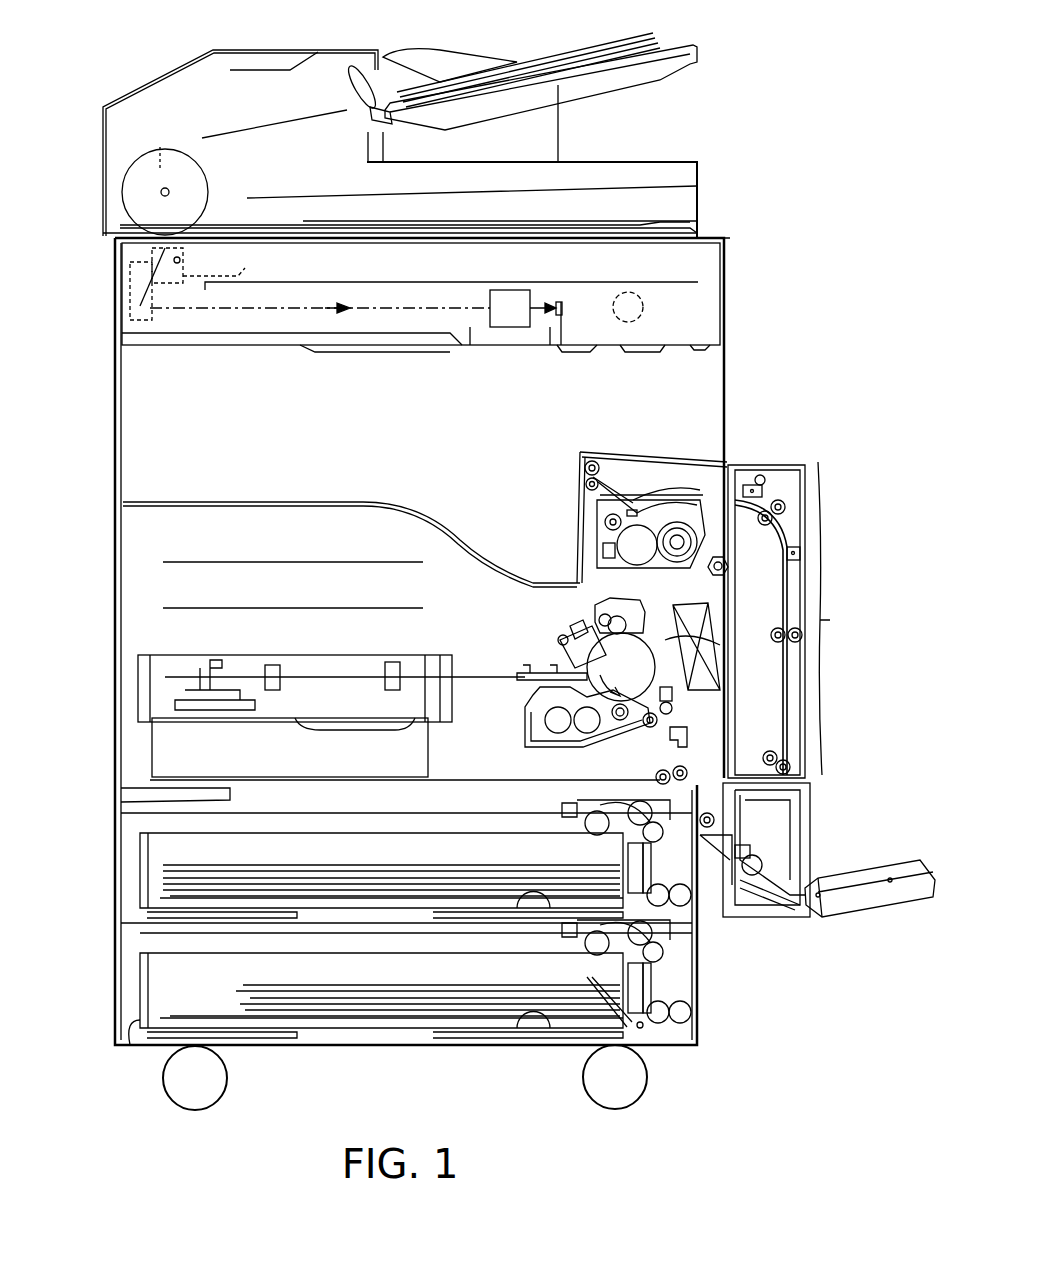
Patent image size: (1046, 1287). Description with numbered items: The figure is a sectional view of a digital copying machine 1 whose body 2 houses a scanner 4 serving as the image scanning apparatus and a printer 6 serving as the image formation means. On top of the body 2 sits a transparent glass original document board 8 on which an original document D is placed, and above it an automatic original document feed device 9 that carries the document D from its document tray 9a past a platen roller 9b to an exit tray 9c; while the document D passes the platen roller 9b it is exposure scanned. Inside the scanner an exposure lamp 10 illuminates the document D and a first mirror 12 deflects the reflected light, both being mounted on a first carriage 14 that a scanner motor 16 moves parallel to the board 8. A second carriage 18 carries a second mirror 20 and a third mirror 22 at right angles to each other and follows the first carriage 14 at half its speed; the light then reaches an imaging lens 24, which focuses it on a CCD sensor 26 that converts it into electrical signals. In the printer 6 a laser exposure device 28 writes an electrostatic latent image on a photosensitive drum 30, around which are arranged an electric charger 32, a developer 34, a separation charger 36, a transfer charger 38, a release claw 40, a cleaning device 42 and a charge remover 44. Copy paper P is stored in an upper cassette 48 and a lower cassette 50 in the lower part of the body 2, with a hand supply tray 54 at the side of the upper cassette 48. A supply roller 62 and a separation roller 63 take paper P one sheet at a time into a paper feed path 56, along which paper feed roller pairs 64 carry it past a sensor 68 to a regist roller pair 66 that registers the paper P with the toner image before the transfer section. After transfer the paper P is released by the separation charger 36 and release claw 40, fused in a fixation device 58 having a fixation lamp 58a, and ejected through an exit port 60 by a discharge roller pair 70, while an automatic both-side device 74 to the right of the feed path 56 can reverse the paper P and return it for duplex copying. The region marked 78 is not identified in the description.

The digital copying machine 1 is at (810, 240).
The apparatus body 2 is at (726, 366).
The scanner 4 is at (721, 302).
The printer 6 is at (818, 808).
The original document board 8 is at (660, 230).
The automatic original document feed device 9 is at (258, 70).
The document tray 9a is at (633, 57).
The platen roller 9b is at (128, 195).
The exit tray 9c is at (628, 162).
The exposure lamp 10 is at (181, 260).
The first mirror 12 is at (166, 280).
The first carriage 14 is at (242, 270).
The scanner motor 16 is at (645, 307).
The second carriage 18 is at (130, 305).
The second mirror 20 is at (143, 275).
The third mirror 22 is at (140, 310).
The imaging lens 24 is at (510, 330).
The CCD sensor 26 is at (564, 308).
The laser exposure device 28 is at (230, 675).
The photosensitive drum 30 is at (640, 640).
The electric charger 32 is at (565, 655).
The developer 34 is at (545, 730).
The separation charger 36 is at (672, 698).
The transfer charger 38 is at (680, 660).
The release claw 40 is at (690, 608).
The cleaning device 42 is at (596, 618).
The charge remover 44 is at (570, 630).
The upper cassette 48 is at (130, 861).
The lower cassette 50 is at (130, 977).
The hand supply tray 54 is at (866, 898).
The paper feed path 56 is at (714, 818).
The fixation device 58 is at (633, 500).
The fixation lamp 58a is at (677, 542).
The exit port 60 is at (585, 485).
The supply roller 62 is at (597, 835).
The separation roller 63 is at (640, 945).
The paper feed roller pairs 64 is at (656, 778).
The regist roller pair 66 is at (645, 725).
The sensor 68 is at (688, 742).
The discharge roller pair 70 is at (585, 466).
The automatic both-side device 74 is at (830, 622).
The internal space 78 is at (344, 416).
The copy paper P is at (620, 497).
The original document D is at (572, 50).